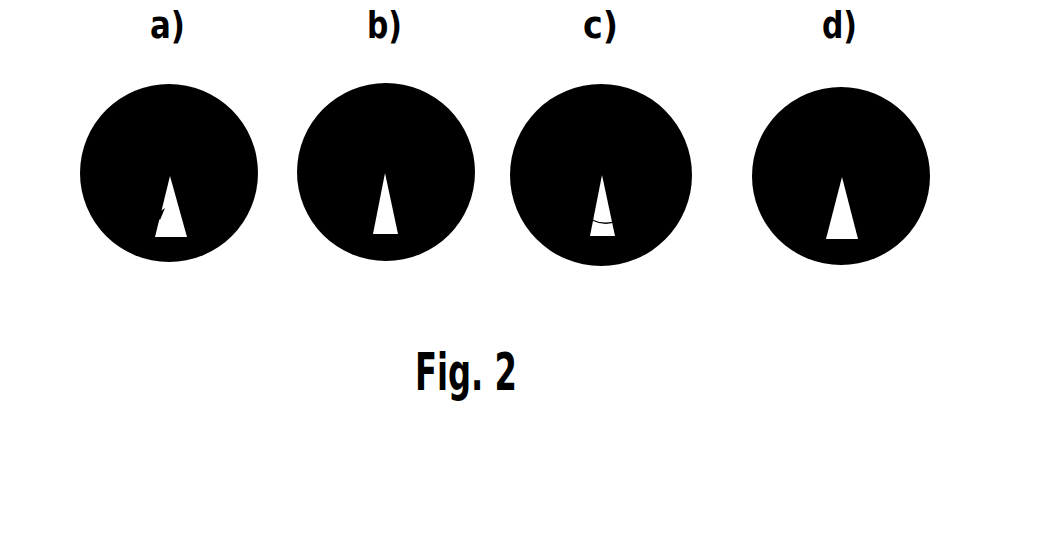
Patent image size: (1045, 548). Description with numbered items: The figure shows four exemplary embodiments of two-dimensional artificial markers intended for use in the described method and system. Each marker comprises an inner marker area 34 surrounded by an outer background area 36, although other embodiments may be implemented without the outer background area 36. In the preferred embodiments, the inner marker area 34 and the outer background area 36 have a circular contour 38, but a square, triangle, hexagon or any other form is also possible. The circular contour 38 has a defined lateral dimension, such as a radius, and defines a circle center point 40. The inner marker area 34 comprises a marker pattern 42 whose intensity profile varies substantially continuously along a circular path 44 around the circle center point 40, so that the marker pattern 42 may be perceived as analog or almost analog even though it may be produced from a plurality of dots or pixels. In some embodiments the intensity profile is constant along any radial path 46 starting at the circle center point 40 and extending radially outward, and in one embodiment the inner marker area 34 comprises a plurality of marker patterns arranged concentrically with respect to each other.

The outer background area 36 is at (125, 112).
The circle center point 40 is at (158, 194).
The inner marker area 34 is at (160, 213).
The marker pattern 42 is at (172, 228).
The circular contour 38 is at (205, 230).
The radial path 46 is at (554, 181).
The circular path 44 is at (622, 221).